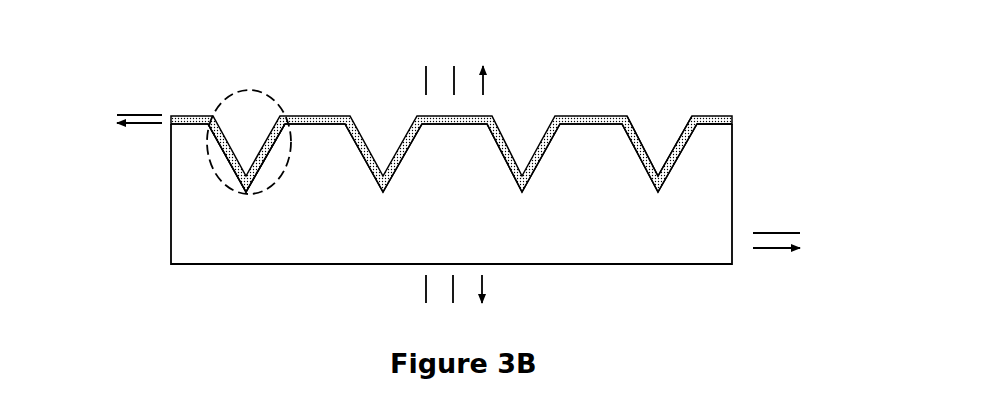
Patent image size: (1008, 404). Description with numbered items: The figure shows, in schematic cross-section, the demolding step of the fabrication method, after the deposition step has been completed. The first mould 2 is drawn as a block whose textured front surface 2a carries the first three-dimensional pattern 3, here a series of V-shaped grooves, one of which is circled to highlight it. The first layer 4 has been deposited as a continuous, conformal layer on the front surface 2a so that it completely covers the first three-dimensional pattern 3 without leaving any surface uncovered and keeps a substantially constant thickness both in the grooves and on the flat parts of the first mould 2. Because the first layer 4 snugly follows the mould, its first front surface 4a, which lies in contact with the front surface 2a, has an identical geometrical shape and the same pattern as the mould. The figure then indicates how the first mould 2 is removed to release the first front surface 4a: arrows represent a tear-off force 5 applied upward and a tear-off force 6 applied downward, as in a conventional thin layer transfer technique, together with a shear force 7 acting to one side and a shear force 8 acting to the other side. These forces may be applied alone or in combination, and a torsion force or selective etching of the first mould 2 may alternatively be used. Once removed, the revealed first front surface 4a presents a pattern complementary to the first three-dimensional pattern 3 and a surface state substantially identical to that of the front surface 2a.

The first mould 2 is at (205, 230).
The front surface of first mould 2a is at (719, 122).
The first 3D pattern 3 is at (218, 177).
The first layer 4 is at (588, 117).
The first front surface of first layer 4a is at (632, 138).
The tear-off force 5 is at (410, 92).
The tear-off force 6 is at (528, 290).
The shear force 7 is at (778, 222).
The shear force 8 is at (133, 90).